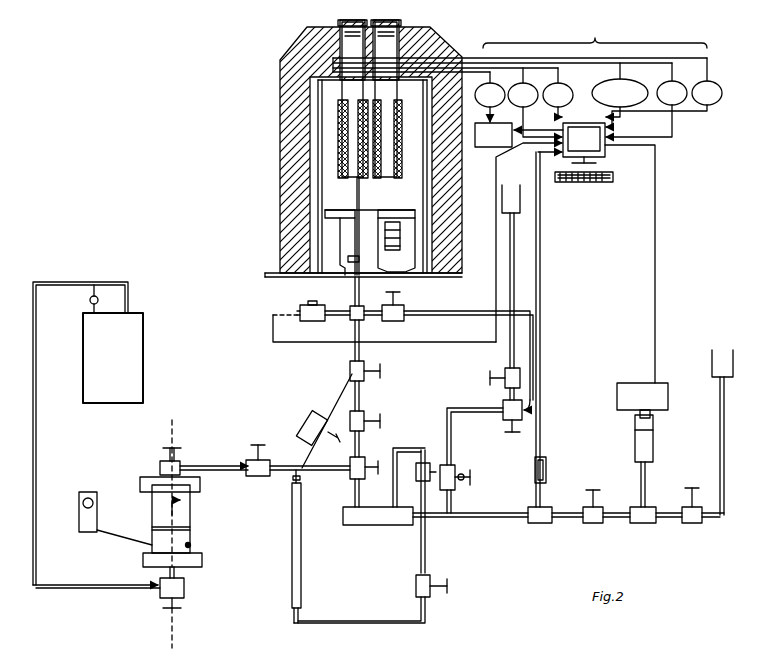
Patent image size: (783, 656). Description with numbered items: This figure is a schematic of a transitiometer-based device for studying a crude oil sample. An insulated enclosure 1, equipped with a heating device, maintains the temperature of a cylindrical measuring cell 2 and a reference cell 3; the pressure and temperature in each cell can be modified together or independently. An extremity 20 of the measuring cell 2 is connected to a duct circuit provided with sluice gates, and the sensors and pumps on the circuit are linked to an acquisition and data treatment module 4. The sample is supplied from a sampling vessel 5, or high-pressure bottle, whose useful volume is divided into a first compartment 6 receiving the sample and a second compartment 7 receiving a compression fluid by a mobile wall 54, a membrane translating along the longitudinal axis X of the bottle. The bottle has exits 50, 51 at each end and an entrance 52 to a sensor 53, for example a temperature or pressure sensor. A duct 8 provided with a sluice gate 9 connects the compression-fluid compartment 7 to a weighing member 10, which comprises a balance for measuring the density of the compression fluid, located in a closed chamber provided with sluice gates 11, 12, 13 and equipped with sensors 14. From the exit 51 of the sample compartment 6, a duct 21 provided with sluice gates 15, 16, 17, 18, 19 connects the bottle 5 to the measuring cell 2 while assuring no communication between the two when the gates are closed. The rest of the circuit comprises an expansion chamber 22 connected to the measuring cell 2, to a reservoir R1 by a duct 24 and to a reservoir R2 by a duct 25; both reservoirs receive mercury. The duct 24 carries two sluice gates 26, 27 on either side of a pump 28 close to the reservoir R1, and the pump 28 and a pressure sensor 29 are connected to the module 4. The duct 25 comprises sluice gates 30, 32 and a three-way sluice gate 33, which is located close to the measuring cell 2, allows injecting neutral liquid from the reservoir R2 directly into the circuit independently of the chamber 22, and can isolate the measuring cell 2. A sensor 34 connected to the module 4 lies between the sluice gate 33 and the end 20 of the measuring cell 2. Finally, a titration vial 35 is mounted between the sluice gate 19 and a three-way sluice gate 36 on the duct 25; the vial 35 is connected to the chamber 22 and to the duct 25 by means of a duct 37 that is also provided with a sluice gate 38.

The insulated enclosure 1 is at (520, 99).
The measuring cell 2 is at (282, 82).
The reference cell 3 is at (400, 165).
The acquisition module and data treatment 4 is at (598, 264).
The sampling vessel 5 is at (190, 527).
The first compartment 6 is at (190, 503).
The second compartment 7 is at (190, 547).
The duct 8 is at (86, 588).
The sluice gate 9 is at (188, 592).
The weighing member 10 is at (102, 364).
The sluice gate 11 is at (143, 378).
The sluice gate 12 is at (113, 358).
The sluice gate 13 is at (113, 358).
The sensors 14 is at (93, 294).
The sluice gate 15 is at (180, 464).
The sluice gate 16 is at (260, 477).
The sluice gate 17 is at (351, 480).
The sluice gate 18 is at (366, 430).
The sluice gate 19 is at (366, 380).
The extremity of the measuring cell 20 is at (348, 276).
The duct 21 is at (283, 463).
The expansion chamber 22 is at (376, 521).
The duct 24 is at (470, 518).
The duct 25 is at (455, 413).
The sluice gate 26 is at (597, 523).
The sluice gate 27 is at (696, 523).
The pump 28 is at (648, 450).
The pressure sensor 29 is at (548, 468).
The sluice gate 30 is at (505, 372).
The sluice gate 32 is at (522, 424).
The three-way sluice gate 33 is at (430, 596).
The sensor 34 is at (300, 308).
The titration vial 35 is at (302, 570).
The three-way sluice gate 36 is at (455, 490).
The duct 37 is at (400, 624).
The sluice gate 38 is at (404, 308).
The exit 50 is at (202, 565).
The exit 51 is at (158, 472).
The entrance 52 is at (152, 500).
The sensor 53 is at (79, 528).
The mobile wall 54 is at (152, 528).
The reservoir R1 is at (722, 355).
The reservoir R2 is at (508, 188).
The longitudinal axis X is at (172, 534).